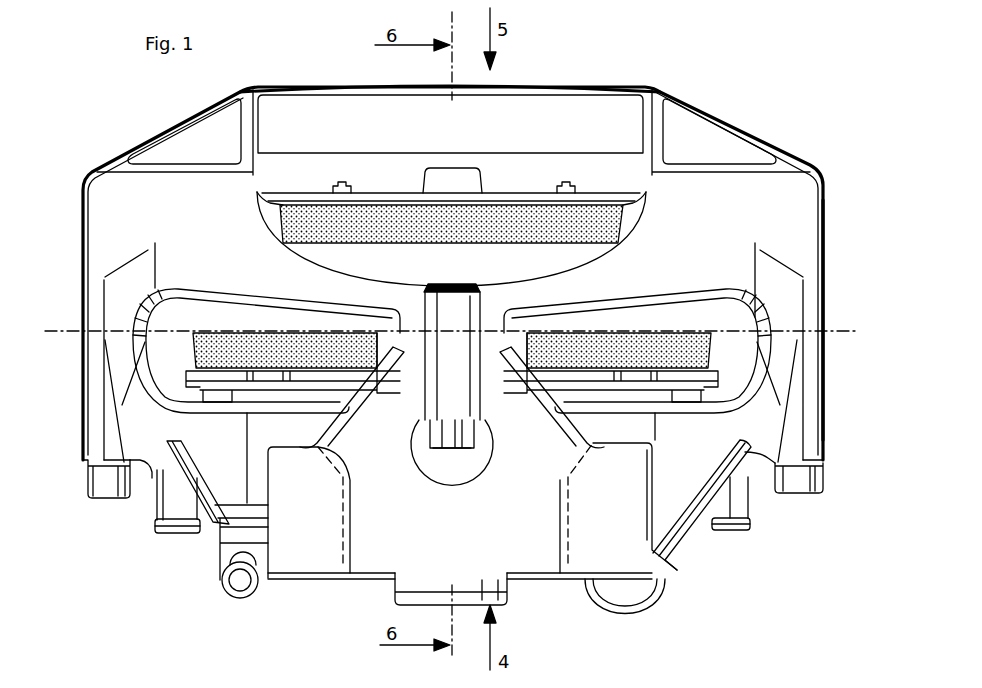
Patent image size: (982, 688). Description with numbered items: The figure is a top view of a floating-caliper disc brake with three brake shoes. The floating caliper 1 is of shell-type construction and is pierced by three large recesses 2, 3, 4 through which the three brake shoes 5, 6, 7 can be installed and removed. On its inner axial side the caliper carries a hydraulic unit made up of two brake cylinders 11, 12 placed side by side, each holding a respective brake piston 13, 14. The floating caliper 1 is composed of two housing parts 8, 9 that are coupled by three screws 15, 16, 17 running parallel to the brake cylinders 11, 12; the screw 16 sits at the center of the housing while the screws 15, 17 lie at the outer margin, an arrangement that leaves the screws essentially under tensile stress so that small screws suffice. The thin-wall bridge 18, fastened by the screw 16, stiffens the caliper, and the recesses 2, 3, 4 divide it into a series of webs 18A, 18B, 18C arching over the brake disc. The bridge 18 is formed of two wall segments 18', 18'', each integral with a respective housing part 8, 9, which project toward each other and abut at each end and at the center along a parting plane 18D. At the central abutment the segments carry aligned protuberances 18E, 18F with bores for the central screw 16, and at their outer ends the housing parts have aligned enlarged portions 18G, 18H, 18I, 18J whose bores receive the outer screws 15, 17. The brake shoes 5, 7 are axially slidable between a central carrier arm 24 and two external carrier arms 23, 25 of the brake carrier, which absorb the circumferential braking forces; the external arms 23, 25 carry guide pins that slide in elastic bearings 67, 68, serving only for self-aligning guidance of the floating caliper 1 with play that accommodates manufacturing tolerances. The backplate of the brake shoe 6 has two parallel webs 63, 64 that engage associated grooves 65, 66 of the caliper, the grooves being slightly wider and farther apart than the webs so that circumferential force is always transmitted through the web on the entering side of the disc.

The floating caliper 1 is at (745, 118).
The recess 2 is at (303, 248).
The recess 3 is at (277, 315).
The recess 4 is at (643, 310).
The brake shoe 5 is at (178, 366).
The brake shoe 6 is at (271, 215).
The brake shoe 7 is at (734, 366).
The housing part 8 is at (813, 215).
The housing part 9 is at (826, 440).
The brake cylinder 11 is at (305, 567).
The brake cylinder 12 is at (578, 560).
The brake piston 13 is at (343, 410).
The brake piston 14 is at (553, 411).
The screw 15 is at (103, 488).
The screw 16 is at (447, 440).
The screw 17 is at (797, 480).
The bridge 18 is at (453, 350).
The wall segment 18' is at (149, 172).
The wall segment 18'' is at (86, 457).
The web 18A is at (354, 300).
The web 18B is at (586, 300).
The web 18C is at (519, 400).
The parting plane 18D is at (70, 330).
The protuberance 18E is at (447, 300).
The protuberance 18F is at (487, 415).
The enlarged portion 18G is at (82, 367).
The enlarged portion 18H is at (97, 284).
The enlarged portion 18I is at (815, 383).
The enlarged portion 18J is at (805, 272).
The carrier arm 23 is at (177, 345).
The central carrier arm 24 is at (388, 355).
The carrier arm 25 is at (747, 347).
The web 63 is at (548, 247).
The web 64 is at (357, 247).
The groove 65 is at (563, 180).
The groove 66 is at (340, 180).
The elastic bearing 67 is at (178, 515).
The elastic bearing 68 is at (727, 515).